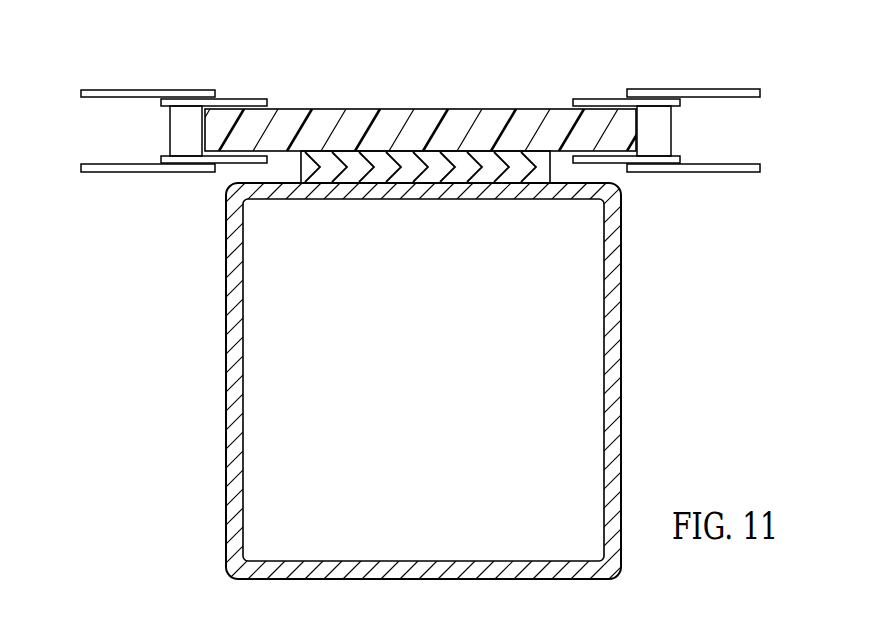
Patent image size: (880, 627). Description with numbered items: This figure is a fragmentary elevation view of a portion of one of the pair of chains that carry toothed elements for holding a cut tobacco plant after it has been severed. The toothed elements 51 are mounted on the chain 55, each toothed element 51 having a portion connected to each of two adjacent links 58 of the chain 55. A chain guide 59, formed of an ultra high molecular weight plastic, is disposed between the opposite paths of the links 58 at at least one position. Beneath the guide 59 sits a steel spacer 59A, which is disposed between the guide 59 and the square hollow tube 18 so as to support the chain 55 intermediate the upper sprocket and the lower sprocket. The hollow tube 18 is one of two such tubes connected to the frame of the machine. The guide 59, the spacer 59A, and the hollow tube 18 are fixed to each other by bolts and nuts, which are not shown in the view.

The square hollow tube 18 is at (622, 359).
The toothed element 51 is at (101, 90).
The chain 55 is at (677, 127).
The link 58 is at (240, 98).
The chain guide 59 is at (322, 108).
The steel spacer 59A is at (300, 166).